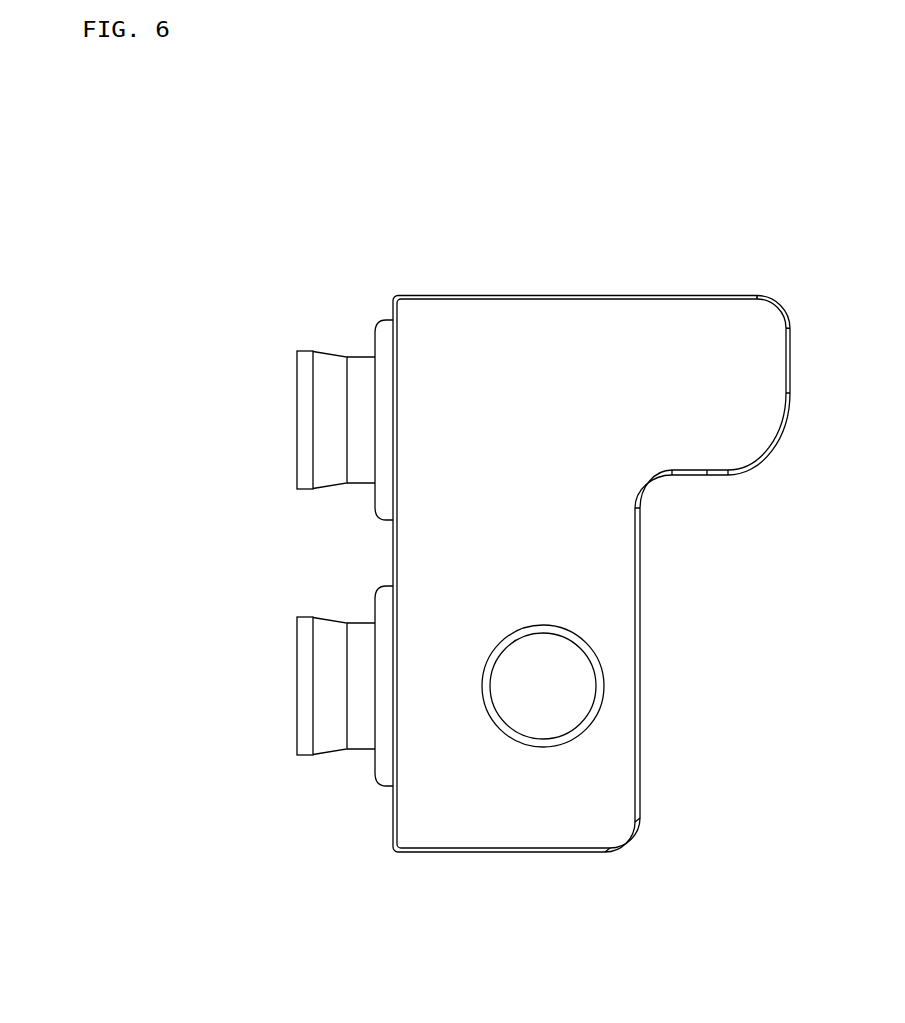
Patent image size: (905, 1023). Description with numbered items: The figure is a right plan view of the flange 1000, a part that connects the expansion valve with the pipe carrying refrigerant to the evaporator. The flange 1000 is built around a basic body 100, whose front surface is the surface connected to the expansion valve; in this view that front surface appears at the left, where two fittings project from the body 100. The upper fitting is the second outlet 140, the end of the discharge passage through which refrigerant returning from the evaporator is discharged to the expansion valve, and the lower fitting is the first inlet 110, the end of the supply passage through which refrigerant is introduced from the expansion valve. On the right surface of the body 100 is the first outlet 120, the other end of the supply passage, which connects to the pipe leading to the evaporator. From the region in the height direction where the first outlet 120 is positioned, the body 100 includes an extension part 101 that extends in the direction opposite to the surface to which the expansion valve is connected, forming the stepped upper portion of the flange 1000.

The flange 1000 is at (335, 218).
The body 100 is at (478, 337).
The extension part 101 is at (681, 310).
The first inlet 110 is at (305, 693).
The first outlet 120 is at (598, 689).
The second outlet 140 is at (305, 417).